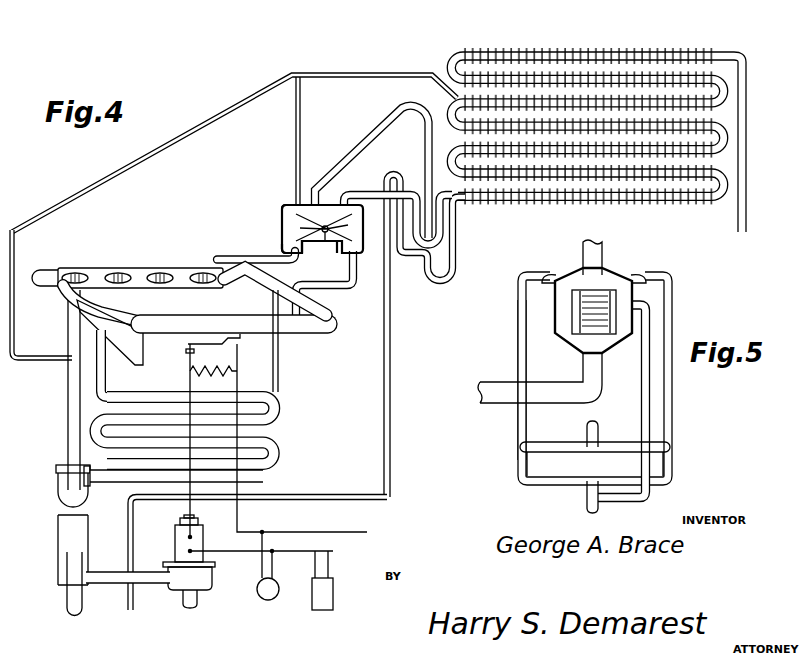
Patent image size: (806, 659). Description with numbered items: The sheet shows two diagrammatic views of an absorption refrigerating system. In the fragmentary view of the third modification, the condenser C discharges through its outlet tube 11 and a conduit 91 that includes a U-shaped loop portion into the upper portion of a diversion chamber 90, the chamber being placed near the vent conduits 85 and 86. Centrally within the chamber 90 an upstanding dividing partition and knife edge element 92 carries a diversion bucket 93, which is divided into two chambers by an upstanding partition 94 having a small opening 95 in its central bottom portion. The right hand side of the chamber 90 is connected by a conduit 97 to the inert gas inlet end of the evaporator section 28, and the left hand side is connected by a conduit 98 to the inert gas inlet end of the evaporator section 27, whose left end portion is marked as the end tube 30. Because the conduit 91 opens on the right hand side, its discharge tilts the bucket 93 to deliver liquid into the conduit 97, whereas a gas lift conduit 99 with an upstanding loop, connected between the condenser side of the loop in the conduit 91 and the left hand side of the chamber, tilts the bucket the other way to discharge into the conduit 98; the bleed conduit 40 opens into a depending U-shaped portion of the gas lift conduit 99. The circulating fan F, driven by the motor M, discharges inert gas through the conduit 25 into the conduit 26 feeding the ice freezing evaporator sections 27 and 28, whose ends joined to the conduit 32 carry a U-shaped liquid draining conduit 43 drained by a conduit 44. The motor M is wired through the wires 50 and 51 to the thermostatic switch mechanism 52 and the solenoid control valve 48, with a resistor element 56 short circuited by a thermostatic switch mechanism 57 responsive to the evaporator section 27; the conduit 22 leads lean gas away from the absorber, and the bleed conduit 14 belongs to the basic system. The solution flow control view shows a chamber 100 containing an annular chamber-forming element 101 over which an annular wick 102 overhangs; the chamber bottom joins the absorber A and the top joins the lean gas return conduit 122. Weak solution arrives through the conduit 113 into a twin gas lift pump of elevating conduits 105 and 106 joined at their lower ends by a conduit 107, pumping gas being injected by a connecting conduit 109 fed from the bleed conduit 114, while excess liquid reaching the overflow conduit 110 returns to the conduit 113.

In FIG. 4, the vent conduit 85 is at (356, 74).
In FIG. 4, the vent conduit 86 is at (301, 113).
In FIG. 4, the condenser C is at (656, 50).
In FIG. 4, the condenser outlet tube 11 is at (747, 212).
In FIG. 4, the bleed conduit 40 is at (391, 335).
In FIG. 4, the bleed conduit 14 is at (135, 600).
In FIG. 4, the gas lift conduit 99 is at (368, 128).
In FIG. 4, the condenser discharge conduit 91 is at (356, 178).
In FIG. 4, the conduit 98 is at (236, 256).
In FIG. 4, the conduit 97 is at (341, 290).
In FIG. 4, the diversion chamber 90 is at (281, 222).
In FIG. 4, the small opening 95 is at (334, 229).
In FIG. 4, the upstanding partition 94 is at (284, 207).
In FIG. 4, the diversion bucket 93 is at (283, 246).
In FIG. 4, the dividing partition and knife edge element 92 is at (314, 249).
In FIG. 4, the ice freezing evaporator section 27 is at (116, 270).
In FIG. 4, the end tube 30 is at (60, 268).
In FIG. 4, the conduit 32 is at (88, 302).
In FIG. 4, the U-shaped liquid draining conduit 43 is at (135, 340).
In FIG. 4, the ice freezing evaporator section 28 is at (222, 316).
In FIG. 4, the conduit 26 is at (277, 278).
In FIG. 4, the conduit 44 is at (104, 378).
In FIG. 4, the fan discharge conduit 25 is at (274, 372).
In FIG. 4, the thermostatic switch mechanism 57 is at (204, 345).
In FIG. 4, the resistor element 56 is at (198, 376).
In FIG. 4, the wire 51 is at (360, 532).
In FIG. 4, the wire 50 is at (358, 548).
In FIG. 4, the solenoid control valve 48 is at (258, 597).
In FIG. 4, the thermostatic switch mechanism 52 is at (334, 600).
In FIG. 4, the drive motor M is at (176, 551).
In FIG. 4, the circulating fan F is at (200, 600).
In FIG. 4, the conduit 22 is at (92, 586).
In FIG. 5, the elevating conduit 106 is at (674, 297).
In FIG. 5, the elevating conduit 105 is at (517, 428).
In FIG. 5, the overflow conduit 110 is at (641, 395).
In FIG. 5, the connecting conduit 109 is at (576, 454).
In FIG. 5, the conduit 107 is at (635, 478).
In FIG. 5, the bleed conduit 114 is at (587, 428).
In FIG. 5, the conduit 113 is at (587, 499).
In FIG. 5, the absorber A is at (482, 356).
In FIG. 5, the chamber 100 is at (625, 274).
In FIG. 5, the lean gas return conduit 122 is at (605, 247).
In FIG. 5, the annular wick 102 is at (571, 299).
In FIG. 5, the annular chamber-forming element 101 is at (580, 321).